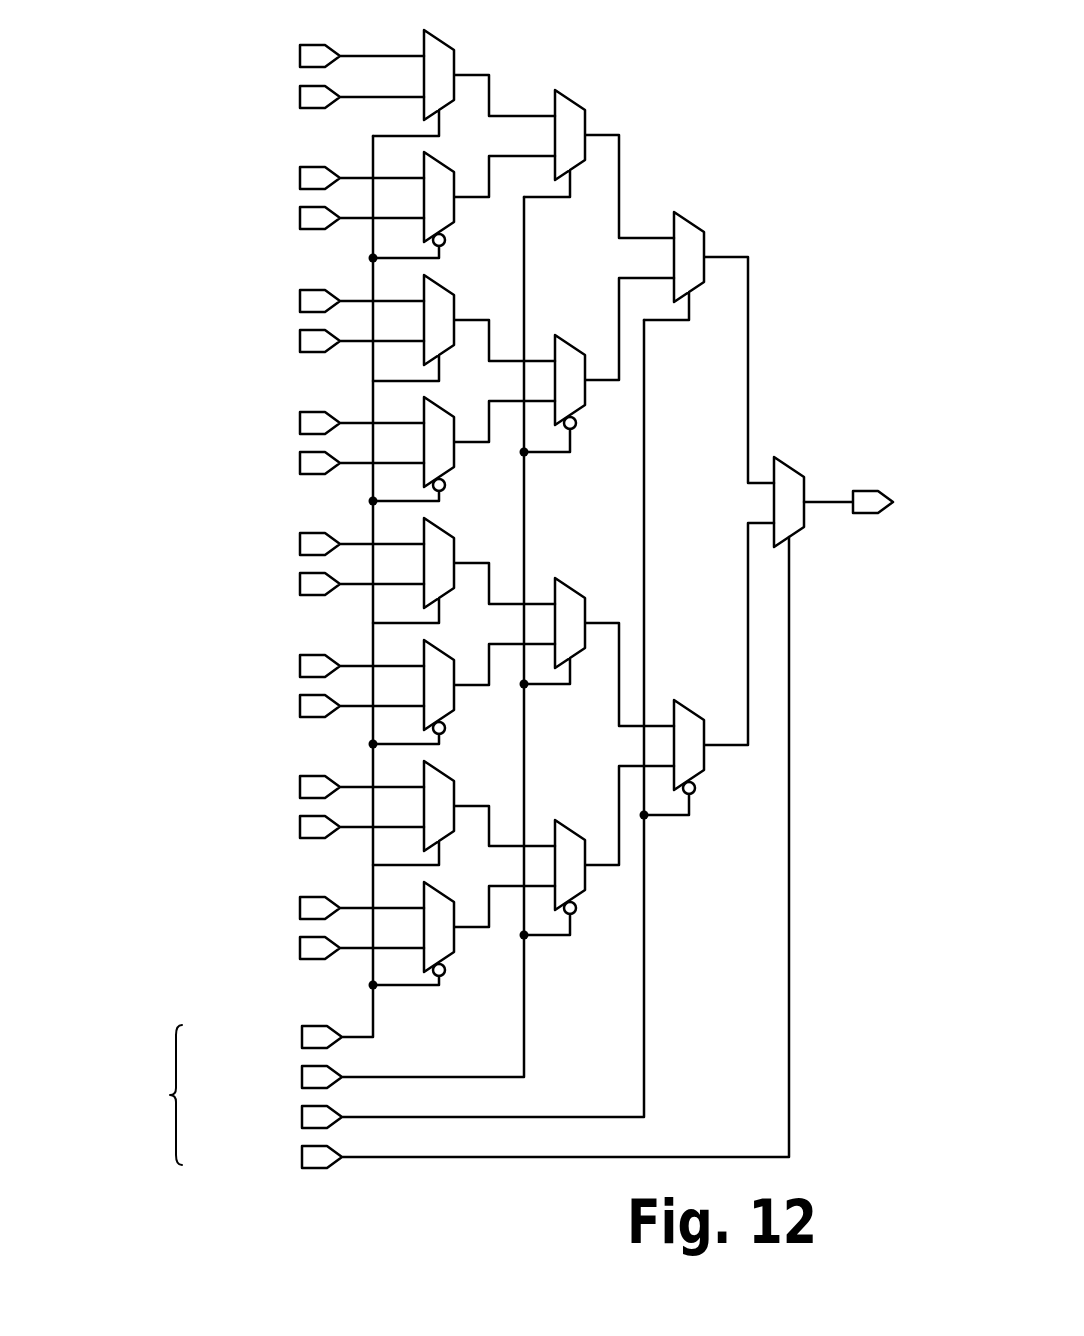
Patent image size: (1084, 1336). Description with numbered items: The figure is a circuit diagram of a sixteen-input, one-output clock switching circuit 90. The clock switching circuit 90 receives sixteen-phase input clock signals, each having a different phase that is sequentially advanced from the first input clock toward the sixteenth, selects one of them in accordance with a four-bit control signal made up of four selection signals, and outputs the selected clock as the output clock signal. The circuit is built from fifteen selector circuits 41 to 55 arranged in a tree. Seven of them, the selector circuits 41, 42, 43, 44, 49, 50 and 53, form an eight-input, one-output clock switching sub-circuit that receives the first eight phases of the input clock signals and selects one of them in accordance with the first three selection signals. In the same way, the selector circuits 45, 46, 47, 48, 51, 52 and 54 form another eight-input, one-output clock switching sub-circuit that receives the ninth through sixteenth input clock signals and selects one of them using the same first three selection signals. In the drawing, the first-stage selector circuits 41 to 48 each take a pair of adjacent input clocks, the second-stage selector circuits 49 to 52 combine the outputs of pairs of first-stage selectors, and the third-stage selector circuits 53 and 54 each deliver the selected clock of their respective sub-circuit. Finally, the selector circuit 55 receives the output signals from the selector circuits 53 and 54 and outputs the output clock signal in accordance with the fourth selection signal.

The selector circuit 41 is at (442, 42).
The selector circuit 42 is at (442, 164).
The selector circuit 43 is at (442, 287).
The selector circuit 44 is at (442, 409).
The selector circuit 45 is at (442, 530).
The selector circuit 46 is at (442, 652).
The selector circuit 47 is at (442, 773).
The selector circuit 48 is at (442, 894).
The selector circuit 49 is at (573, 102).
The selector circuit 50 is at (573, 347).
The selector circuit 51 is at (573, 590).
The selector circuit 52 is at (573, 832).
The selector circuit 53 is at (692, 224).
The selector circuit 54 is at (692, 712).
The selector circuit 55 is at (792, 469).
The clock switching circuit 90 is at (852, 138).